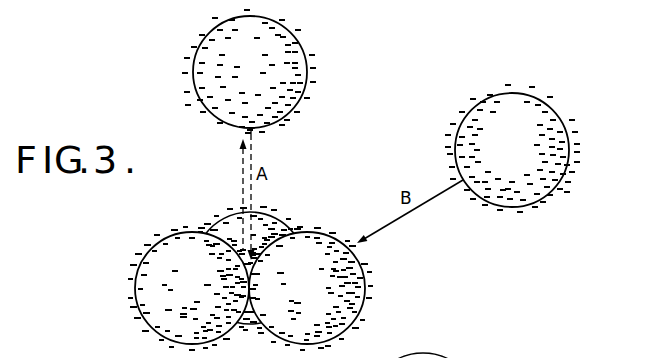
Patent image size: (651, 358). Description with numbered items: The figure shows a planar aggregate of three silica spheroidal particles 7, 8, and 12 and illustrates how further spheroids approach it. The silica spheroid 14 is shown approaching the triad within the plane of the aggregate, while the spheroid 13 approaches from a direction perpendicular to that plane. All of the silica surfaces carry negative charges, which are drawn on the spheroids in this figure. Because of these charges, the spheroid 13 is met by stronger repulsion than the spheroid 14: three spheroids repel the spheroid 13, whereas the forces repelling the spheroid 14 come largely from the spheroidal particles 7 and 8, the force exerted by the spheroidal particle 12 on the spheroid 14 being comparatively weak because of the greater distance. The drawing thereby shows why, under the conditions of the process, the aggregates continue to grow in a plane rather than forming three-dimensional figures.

The spheroid 13 is at (249, 71).
The spheroidal particle 12 is at (192, 288).
The spheroidal particle 8 is at (306, 288).
The spheroidal particle 7 is at (249, 268).
The silica spheroid 14 is at (512, 148).